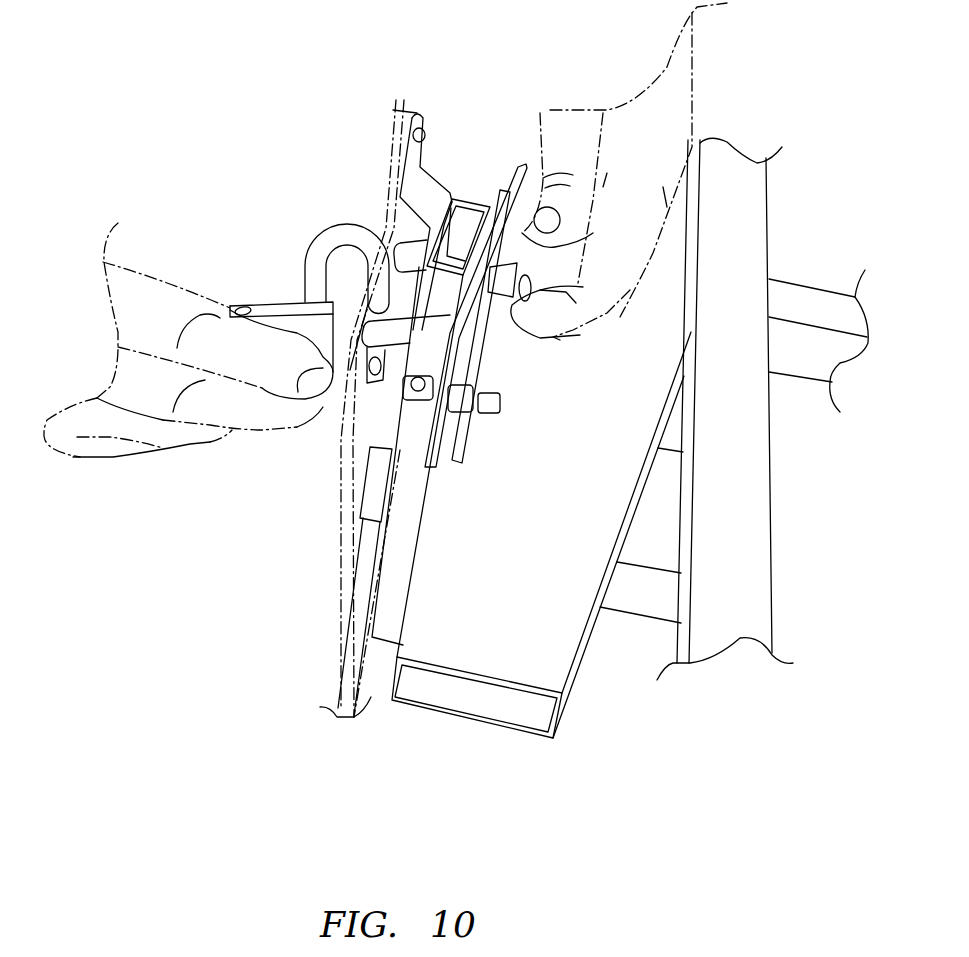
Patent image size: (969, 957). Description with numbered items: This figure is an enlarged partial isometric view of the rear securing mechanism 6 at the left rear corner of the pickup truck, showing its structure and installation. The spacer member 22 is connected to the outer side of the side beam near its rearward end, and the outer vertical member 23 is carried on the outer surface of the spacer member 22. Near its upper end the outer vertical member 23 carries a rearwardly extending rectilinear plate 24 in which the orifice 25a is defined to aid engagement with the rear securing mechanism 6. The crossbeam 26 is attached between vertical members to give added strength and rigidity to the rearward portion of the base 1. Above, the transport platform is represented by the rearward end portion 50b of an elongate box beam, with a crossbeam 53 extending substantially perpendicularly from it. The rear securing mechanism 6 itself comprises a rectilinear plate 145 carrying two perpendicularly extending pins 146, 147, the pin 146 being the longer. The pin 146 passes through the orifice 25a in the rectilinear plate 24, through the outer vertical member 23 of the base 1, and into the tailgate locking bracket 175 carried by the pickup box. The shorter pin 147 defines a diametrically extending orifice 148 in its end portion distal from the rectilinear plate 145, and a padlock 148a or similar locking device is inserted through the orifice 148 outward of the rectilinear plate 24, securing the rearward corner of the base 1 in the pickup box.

The base 1 is at (466, 125).
The rear securing mechanism 6 is at (518, 380).
The spacer member 22 is at (463, 620).
The outer vertical member 23 is at (413, 513).
The rectilinear plate 24 is at (502, 200).
The orifice 25a is at (513, 268).
The crossbeam 26 is at (640, 602).
The rearward end portion 50b is at (742, 458).
The crossbeam 53 is at (782, 297).
The rectilinear plate 145 is at (540, 308).
The pin 146 is at (450, 317).
The pin 147 is at (470, 402).
The orifice 148 is at (313, 303).
The padlock 148a is at (310, 306).
The tailgate locking bracket 175 is at (427, 200).